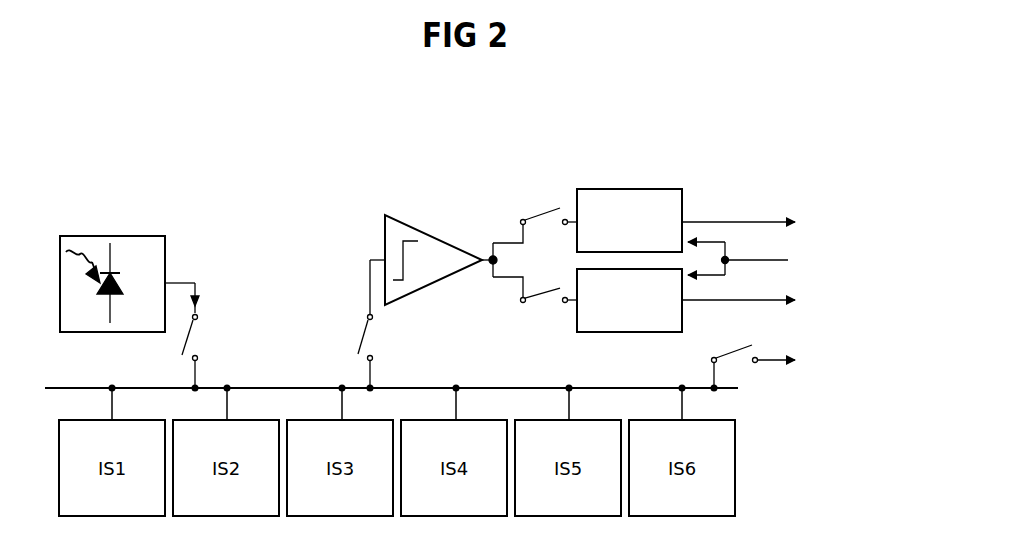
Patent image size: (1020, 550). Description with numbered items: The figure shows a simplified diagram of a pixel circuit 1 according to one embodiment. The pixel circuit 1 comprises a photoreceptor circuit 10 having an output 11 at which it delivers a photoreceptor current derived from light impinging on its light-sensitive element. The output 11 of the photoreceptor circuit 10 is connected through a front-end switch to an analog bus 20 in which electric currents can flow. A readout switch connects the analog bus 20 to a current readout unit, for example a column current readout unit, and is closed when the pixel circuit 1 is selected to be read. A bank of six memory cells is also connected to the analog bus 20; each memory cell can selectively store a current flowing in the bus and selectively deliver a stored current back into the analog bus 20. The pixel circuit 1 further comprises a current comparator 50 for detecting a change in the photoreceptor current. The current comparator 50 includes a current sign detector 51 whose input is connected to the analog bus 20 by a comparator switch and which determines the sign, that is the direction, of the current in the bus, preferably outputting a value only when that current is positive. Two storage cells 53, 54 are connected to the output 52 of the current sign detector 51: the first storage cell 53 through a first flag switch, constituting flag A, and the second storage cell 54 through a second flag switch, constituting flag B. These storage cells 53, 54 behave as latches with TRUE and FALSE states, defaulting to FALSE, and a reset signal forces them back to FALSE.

The pixel circuit 1 is at (266, 170).
The photoreceptor circuit 10 is at (115, 235).
The output 11 is at (183, 280).
The analog bus 20 is at (55, 383).
The current comparator 50 is at (488, 163).
The current sign detector 51 is at (405, 220).
The output 52 is at (480, 258).
The first storage cell 53 is at (645, 188).
The second storage cell 54 is at (620, 335).